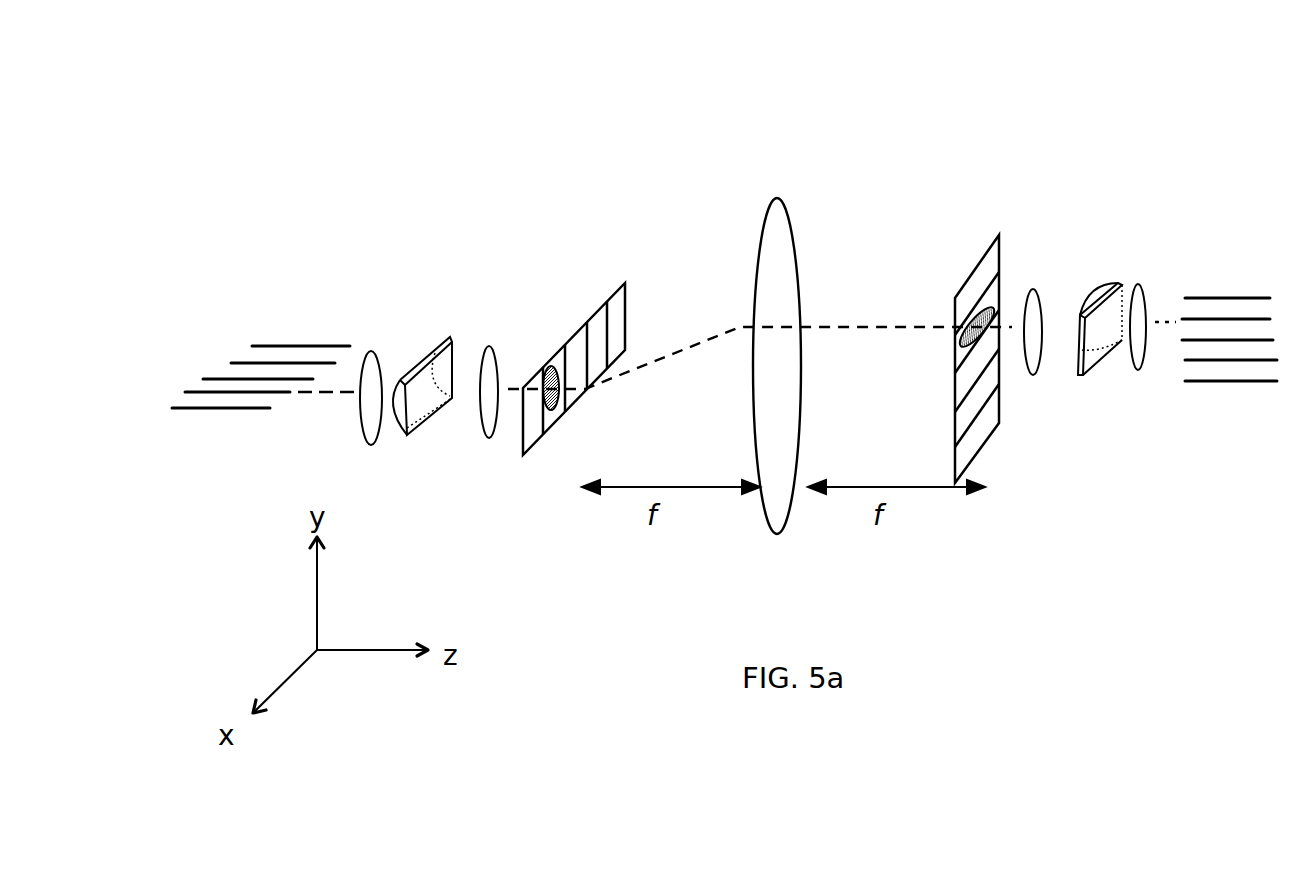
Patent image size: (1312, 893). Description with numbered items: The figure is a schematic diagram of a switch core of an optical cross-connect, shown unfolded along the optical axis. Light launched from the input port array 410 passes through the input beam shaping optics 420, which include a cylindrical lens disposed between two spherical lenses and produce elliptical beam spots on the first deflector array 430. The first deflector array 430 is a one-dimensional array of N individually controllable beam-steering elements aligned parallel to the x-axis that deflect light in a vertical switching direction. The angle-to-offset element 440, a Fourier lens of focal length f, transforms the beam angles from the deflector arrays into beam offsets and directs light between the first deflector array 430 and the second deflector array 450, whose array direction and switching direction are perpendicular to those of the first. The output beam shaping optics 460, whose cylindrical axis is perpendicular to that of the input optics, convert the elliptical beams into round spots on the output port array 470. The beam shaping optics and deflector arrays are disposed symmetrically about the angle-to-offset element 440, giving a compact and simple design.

The input port array 410 is at (347, 327).
The input beam shaping optics 420 is at (438, 302).
The first deflector array 430 is at (632, 273).
The angle-to-offset (ATO) element 440 is at (765, 197).
The second deflector array 450 is at (965, 250).
The output beam shaping optics 460 is at (1087, 258).
The output port array 470 is at (1183, 298).